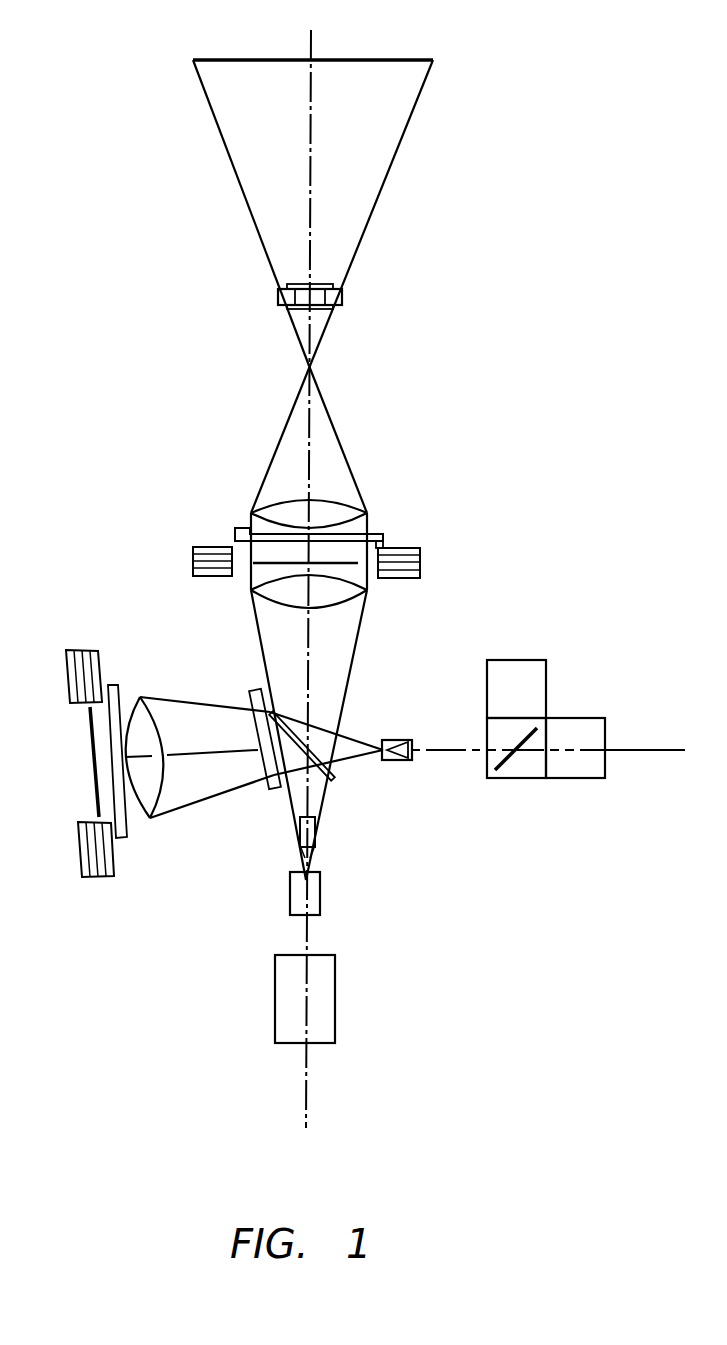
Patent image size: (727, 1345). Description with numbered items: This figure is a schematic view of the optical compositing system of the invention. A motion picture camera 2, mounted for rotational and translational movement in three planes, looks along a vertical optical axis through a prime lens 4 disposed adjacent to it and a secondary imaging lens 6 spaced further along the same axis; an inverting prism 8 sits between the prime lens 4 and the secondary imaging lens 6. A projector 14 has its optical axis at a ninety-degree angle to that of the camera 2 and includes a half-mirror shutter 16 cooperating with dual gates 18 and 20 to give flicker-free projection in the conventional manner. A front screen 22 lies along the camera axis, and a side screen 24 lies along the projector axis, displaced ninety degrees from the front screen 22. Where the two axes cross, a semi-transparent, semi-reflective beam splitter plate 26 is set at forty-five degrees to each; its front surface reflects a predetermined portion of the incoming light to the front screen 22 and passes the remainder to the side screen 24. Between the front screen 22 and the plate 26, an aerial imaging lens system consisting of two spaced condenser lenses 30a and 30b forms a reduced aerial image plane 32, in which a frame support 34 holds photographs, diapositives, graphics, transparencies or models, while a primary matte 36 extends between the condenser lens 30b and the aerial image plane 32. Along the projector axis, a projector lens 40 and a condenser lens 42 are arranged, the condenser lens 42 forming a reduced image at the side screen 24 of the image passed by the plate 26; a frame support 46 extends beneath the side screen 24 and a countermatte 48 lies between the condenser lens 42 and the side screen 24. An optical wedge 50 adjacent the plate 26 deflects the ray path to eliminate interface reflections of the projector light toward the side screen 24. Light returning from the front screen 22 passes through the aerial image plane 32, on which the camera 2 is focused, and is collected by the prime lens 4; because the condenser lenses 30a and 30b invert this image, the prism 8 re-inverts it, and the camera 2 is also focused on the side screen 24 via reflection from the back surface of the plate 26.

The motion picture camera 2 is at (335, 1010).
The prime lens 4 is at (320, 897).
The secondary imaging lens 6 is at (318, 285).
The inverting prism 8 is at (306, 840).
The projector 14 is at (553, 717).
The half-mirror shutter 16 is at (520, 762).
The gate 18 is at (511, 670).
The gate 20 is at (587, 763).
The front screen 22 is at (385, 60).
The side screen 24 is at (90, 762).
The beam splitter plate 26 is at (320, 742).
The condenser lens 30a is at (330, 604).
The condenser lens 30b is at (331, 516).
The aerial image plane 32 is at (357, 564).
The frame support 34 is at (420, 560).
The primary matte 36 is at (383, 535).
The projector lens 40 is at (398, 740).
The condenser lens 42 is at (138, 712).
The frame support 46 is at (85, 658).
The countermatte 48 is at (125, 816).
The optical wedge 50 is at (255, 693).